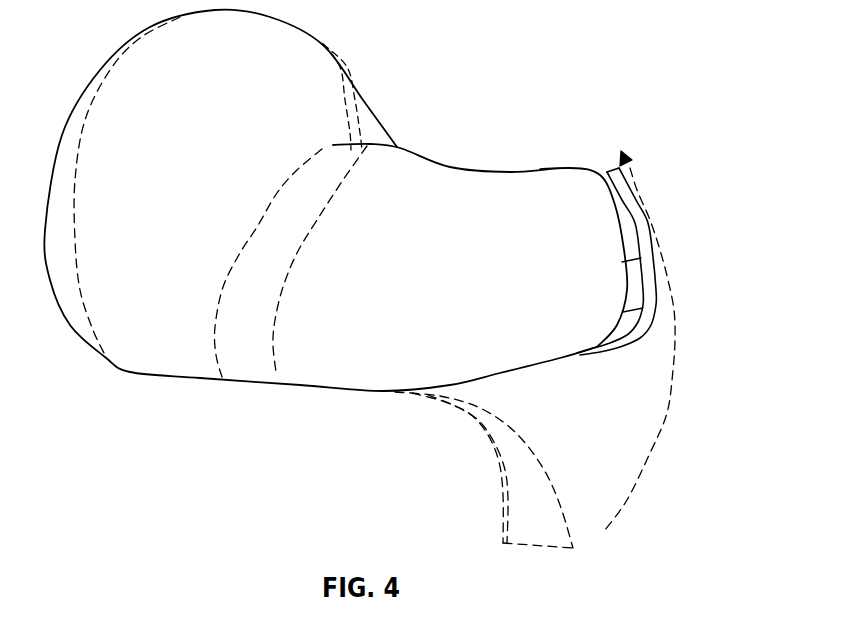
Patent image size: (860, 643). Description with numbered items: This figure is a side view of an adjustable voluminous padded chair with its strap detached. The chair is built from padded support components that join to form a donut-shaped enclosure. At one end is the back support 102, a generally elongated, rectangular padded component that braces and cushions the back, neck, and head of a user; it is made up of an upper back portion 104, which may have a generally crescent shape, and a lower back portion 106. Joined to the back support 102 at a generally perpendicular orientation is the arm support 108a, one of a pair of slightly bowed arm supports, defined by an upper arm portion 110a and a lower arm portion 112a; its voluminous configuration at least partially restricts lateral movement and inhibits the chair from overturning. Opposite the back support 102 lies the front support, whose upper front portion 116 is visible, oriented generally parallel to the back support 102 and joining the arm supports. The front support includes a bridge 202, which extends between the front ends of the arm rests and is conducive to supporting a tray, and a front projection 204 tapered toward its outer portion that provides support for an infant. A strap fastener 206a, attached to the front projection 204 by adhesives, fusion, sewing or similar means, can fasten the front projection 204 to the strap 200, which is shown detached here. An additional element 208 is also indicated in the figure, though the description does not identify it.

The back support 102 is at (191, 195).
The upper back portion 104 is at (133, 60).
The lower back portion 106 is at (133, 373).
The arm support 108a is at (432, 311).
The upper arm portion 110a is at (350, 145).
The lower arm portion 112a is at (320, 390).
The upper front portion 116 is at (440, 177).
The strap 200 is at (632, 200).
The bridge 202 is at (555, 167).
The front projection 204 is at (628, 312).
The strap fastener 206a is at (627, 263).
The wrist opening direction 208 is at (583, 366).